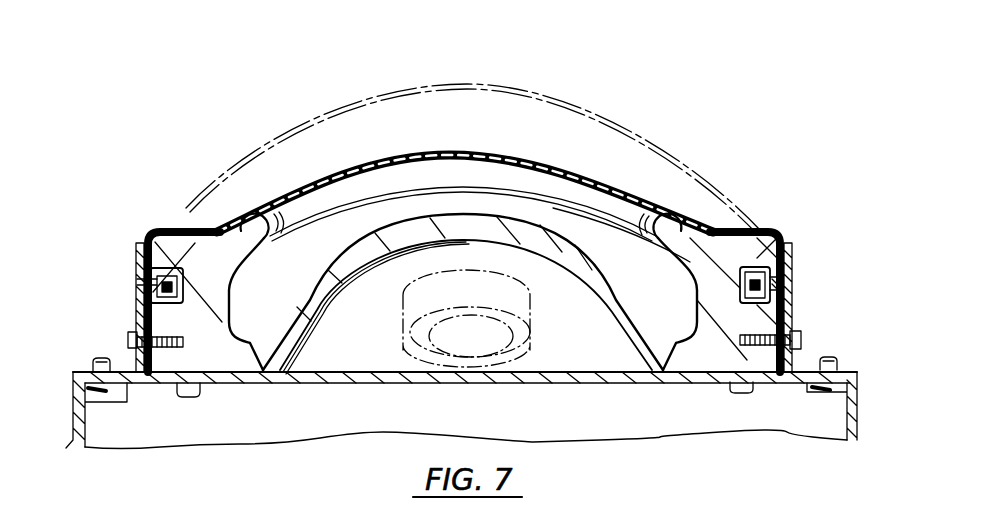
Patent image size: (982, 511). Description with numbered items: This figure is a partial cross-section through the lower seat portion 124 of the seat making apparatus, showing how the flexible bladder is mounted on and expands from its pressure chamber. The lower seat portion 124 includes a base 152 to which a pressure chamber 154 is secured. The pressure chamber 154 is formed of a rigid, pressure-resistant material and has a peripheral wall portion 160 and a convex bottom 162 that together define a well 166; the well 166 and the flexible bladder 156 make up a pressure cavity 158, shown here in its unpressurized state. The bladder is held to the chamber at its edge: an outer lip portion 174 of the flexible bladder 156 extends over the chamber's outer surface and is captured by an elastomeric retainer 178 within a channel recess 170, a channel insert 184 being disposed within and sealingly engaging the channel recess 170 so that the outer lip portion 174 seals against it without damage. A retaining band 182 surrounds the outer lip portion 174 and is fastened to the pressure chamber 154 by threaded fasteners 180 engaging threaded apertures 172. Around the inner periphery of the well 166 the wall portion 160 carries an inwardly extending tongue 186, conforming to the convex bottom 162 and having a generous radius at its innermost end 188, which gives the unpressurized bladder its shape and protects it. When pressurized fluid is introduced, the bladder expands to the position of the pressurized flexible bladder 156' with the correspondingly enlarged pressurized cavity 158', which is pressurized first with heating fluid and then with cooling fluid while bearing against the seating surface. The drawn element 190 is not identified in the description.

The lower seat portion 124 is at (780, 149).
The base 152 is at (850, 440).
The pressure chamber 154 is at (338, 343).
The flexible bladder 156 is at (465, 144).
The pressurized flexible bladder 156' is at (474, 126).
The pressure cavity 158 is at (511, 190).
The pressurized cavity 158' is at (474, 155).
The peripheral wall portion 160 is at (779, 231).
The convex bottom 162 is at (478, 212).
The well 166 is at (308, 283).
The channel recess 170 is at (160, 290).
The threaded apertures 172 is at (177, 348).
The outer lip portion 174 is at (148, 320).
The elastomeric retainer 178 is at (168, 281).
The threaded fasteners 180 is at (128, 340).
The retaining band 182 is at (138, 245).
The channel insert 184 is at (193, 290).
The tongue 186 is at (247, 228).
The innermost end 188 is at (251, 212).
The boss 190 is at (530, 318).